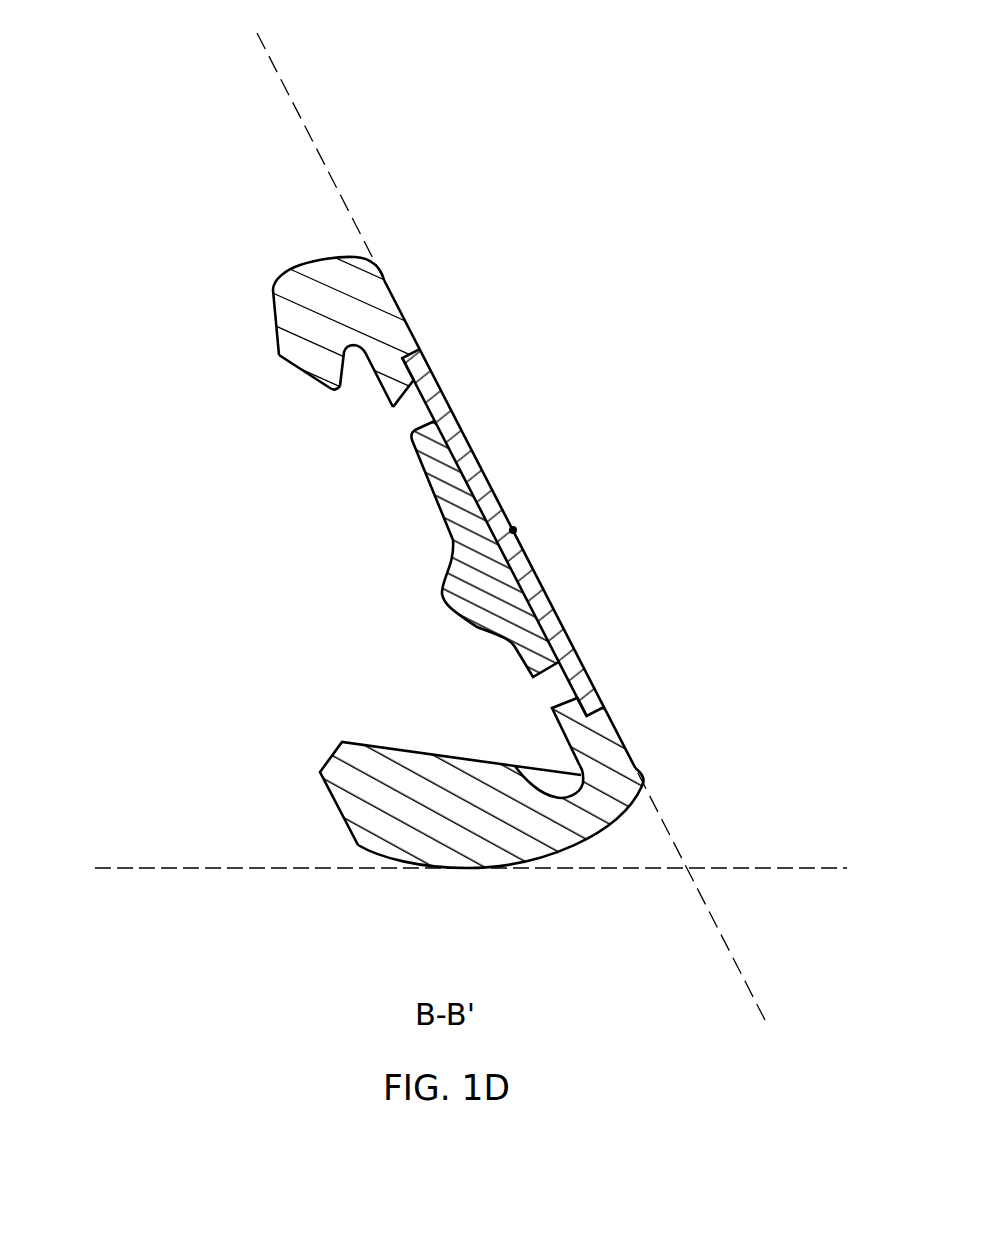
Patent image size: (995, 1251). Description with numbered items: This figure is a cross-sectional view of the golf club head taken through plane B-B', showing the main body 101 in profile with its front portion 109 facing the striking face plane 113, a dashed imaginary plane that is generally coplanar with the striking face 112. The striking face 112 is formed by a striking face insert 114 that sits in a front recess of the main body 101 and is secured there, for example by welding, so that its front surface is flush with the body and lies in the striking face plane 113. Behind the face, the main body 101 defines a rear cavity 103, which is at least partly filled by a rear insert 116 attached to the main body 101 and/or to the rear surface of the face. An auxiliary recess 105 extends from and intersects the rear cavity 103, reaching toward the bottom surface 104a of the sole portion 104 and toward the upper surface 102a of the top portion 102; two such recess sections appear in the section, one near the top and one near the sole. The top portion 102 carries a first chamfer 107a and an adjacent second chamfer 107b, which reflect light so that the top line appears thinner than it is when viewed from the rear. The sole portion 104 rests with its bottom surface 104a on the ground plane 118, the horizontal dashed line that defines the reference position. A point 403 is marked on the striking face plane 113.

The main body 101 is at (548, 302).
The top portion 102 is at (310, 250).
The upper surface 102a is at (307, 263).
The rear cavity 103 is at (313, 600).
The sole portion 104 is at (398, 883).
The bottom surface 104a is at (467, 872).
The auxiliary recess 105 is at (372, 382).
The first chamfer 107a is at (272, 313).
The second chamfer 107b is at (295, 372).
The front portion 109 is at (425, 323).
The striking face 112 is at (473, 448).
The striking face plane 113 is at (272, 58).
The striking face insert 114 is at (503, 520).
The rear insert 116 is at (450, 537).
The ground plane 118 is at (795, 867).
The reference point 403 is at (516, 530).